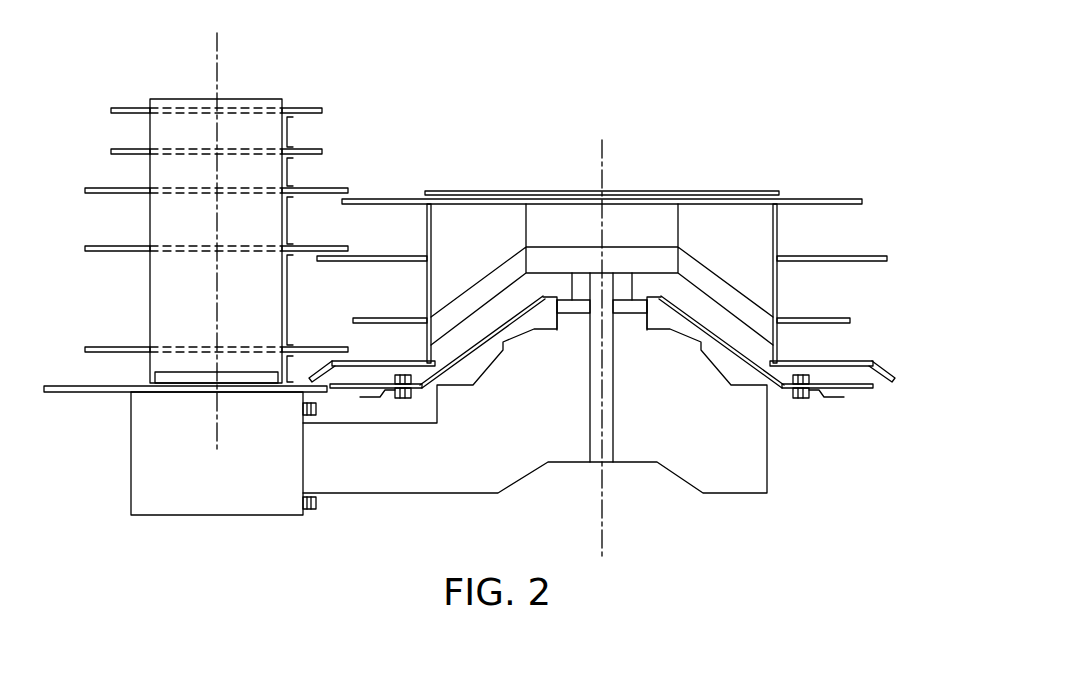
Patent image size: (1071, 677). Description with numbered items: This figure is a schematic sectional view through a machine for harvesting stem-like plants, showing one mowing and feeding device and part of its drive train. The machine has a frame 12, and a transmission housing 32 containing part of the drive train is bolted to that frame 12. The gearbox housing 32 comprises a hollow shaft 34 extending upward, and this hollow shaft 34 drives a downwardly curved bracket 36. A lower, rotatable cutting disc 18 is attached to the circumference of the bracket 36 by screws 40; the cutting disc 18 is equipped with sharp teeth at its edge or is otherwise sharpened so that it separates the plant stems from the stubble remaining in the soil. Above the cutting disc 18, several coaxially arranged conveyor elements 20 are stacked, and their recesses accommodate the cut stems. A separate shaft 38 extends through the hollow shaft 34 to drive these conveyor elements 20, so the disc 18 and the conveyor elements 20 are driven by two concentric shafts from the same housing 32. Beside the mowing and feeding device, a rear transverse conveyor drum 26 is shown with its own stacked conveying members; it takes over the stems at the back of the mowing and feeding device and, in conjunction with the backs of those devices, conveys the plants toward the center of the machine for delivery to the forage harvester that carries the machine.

The frame 12 is at (256, 515).
The cutting disc 18 is at (860, 388).
The conveyor elements 20 is at (862, 202).
The rear transverse conveyor drum 26 is at (247, 130).
The transmission housing 32 is at (768, 475).
The hollow shaft 34 is at (657, 312).
The downwardly curved bracket 36 is at (737, 360).
The shaft 38 is at (596, 284).
The screws 40 is at (780, 395).